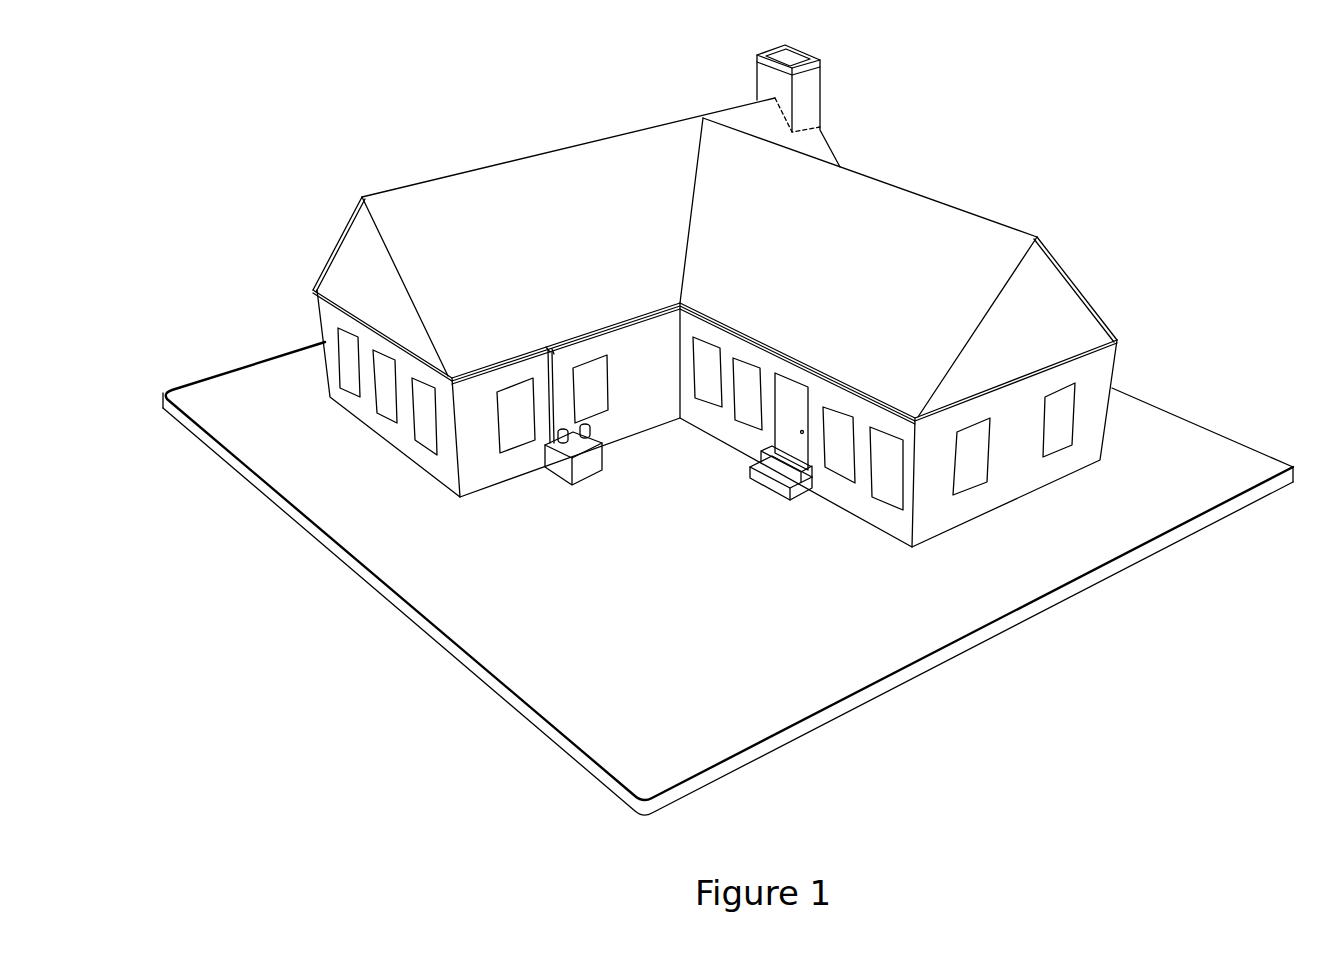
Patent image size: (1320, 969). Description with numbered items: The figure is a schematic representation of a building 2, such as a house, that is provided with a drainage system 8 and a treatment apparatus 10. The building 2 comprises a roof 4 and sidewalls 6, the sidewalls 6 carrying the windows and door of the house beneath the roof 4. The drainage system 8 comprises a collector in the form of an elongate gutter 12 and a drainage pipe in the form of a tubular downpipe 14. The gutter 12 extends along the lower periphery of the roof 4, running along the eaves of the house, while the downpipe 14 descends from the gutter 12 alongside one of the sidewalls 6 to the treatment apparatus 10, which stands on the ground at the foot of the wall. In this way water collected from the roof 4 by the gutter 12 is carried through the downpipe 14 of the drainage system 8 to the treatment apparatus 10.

The building 2 is at (952, 128).
The roof 4 is at (528, 192).
The sidewalls 6 is at (360, 413).
The drainage system 8 is at (545, 328).
The treatment apparatus 10 is at (587, 465).
The gutter 12 is at (634, 320).
The downpipe 14 is at (553, 400).